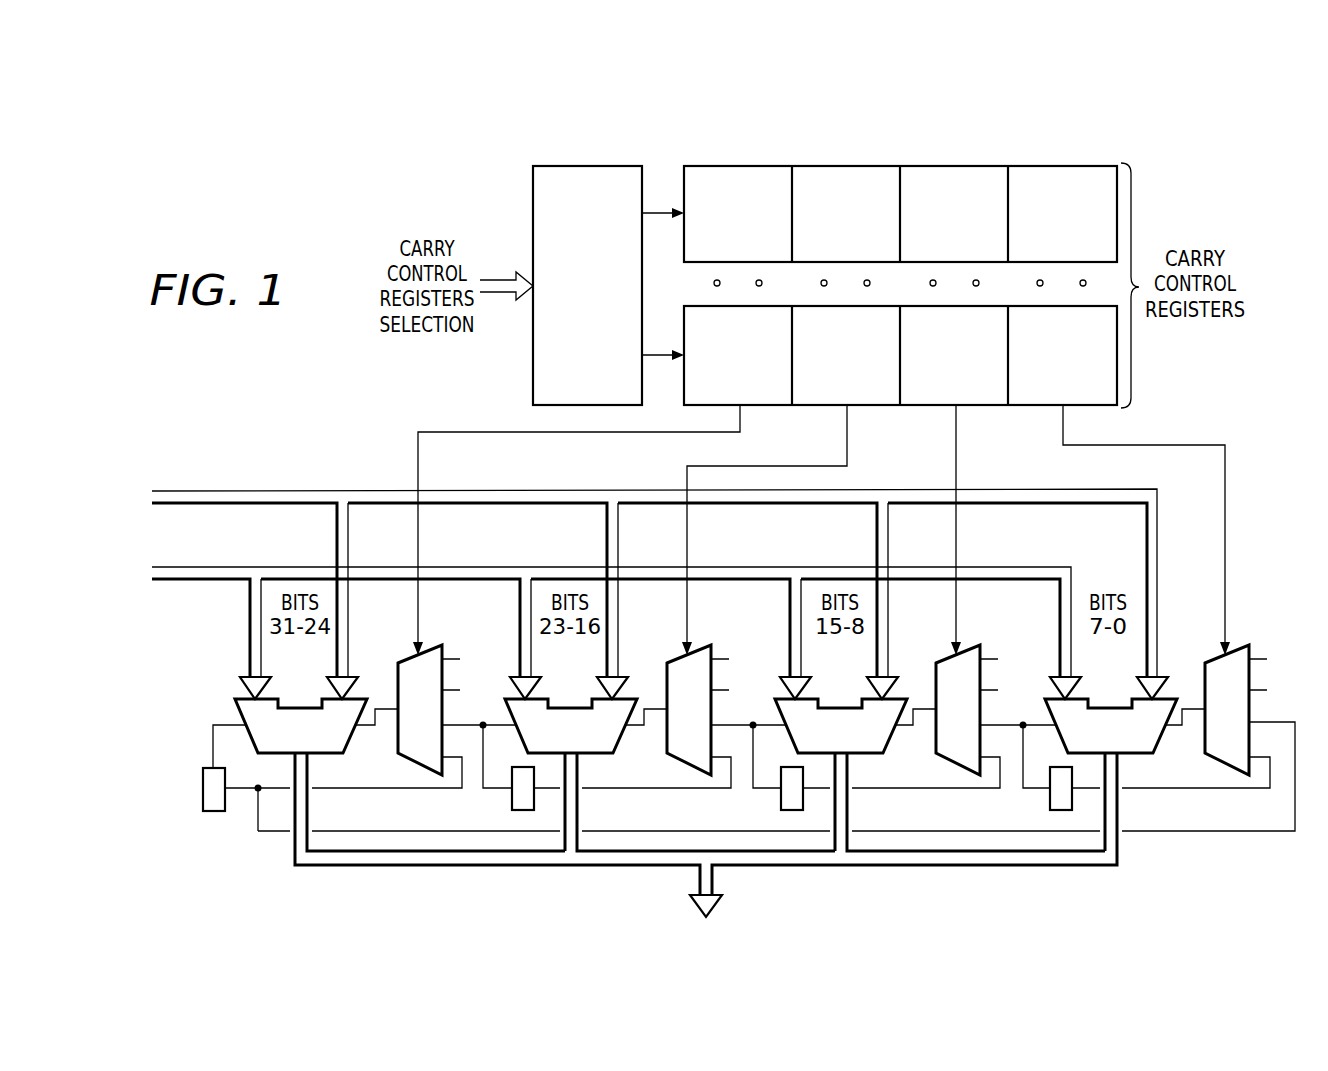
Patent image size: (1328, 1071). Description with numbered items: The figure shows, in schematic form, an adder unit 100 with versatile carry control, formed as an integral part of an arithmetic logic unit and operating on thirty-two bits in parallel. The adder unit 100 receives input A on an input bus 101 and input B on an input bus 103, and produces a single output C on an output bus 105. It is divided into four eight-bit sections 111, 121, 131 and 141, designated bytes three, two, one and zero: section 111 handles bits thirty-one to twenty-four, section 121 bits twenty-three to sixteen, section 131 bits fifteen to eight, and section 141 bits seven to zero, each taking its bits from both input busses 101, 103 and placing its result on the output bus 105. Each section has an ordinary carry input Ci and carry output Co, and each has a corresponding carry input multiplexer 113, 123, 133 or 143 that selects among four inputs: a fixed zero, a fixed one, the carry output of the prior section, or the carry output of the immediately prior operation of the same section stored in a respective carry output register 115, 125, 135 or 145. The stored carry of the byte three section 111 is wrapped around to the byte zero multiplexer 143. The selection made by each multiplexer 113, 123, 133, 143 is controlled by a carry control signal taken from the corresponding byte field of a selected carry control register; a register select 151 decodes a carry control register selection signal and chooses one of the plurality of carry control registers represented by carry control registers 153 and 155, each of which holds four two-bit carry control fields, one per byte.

The adder unit 100 is at (418, 170).
The input bus 101 is at (485, 505).
The input bus 103 is at (205, 582).
The output bus 105 is at (699, 879).
The section 111 is at (303, 707).
The carry input multiplexer 113 is at (402, 660).
The carry output register 115 is at (214, 813).
The section 121 is at (573, 707).
The carry input multiplexer 123 is at (671, 660).
The carry output register 125 is at (507, 802).
The section 131 is at (843, 707).
The carry input multiplexer 133 is at (940, 660).
The carry output register 135 is at (776, 802).
The section 141 is at (1113, 707).
The carry input multiplexer 143 is at (1209, 660).
The carry output register 145 is at (1045, 802).
The register select 151 is at (570, 329).
The carry control register 153 is at (828, 155).
The carry control register 155 is at (1003, 418).